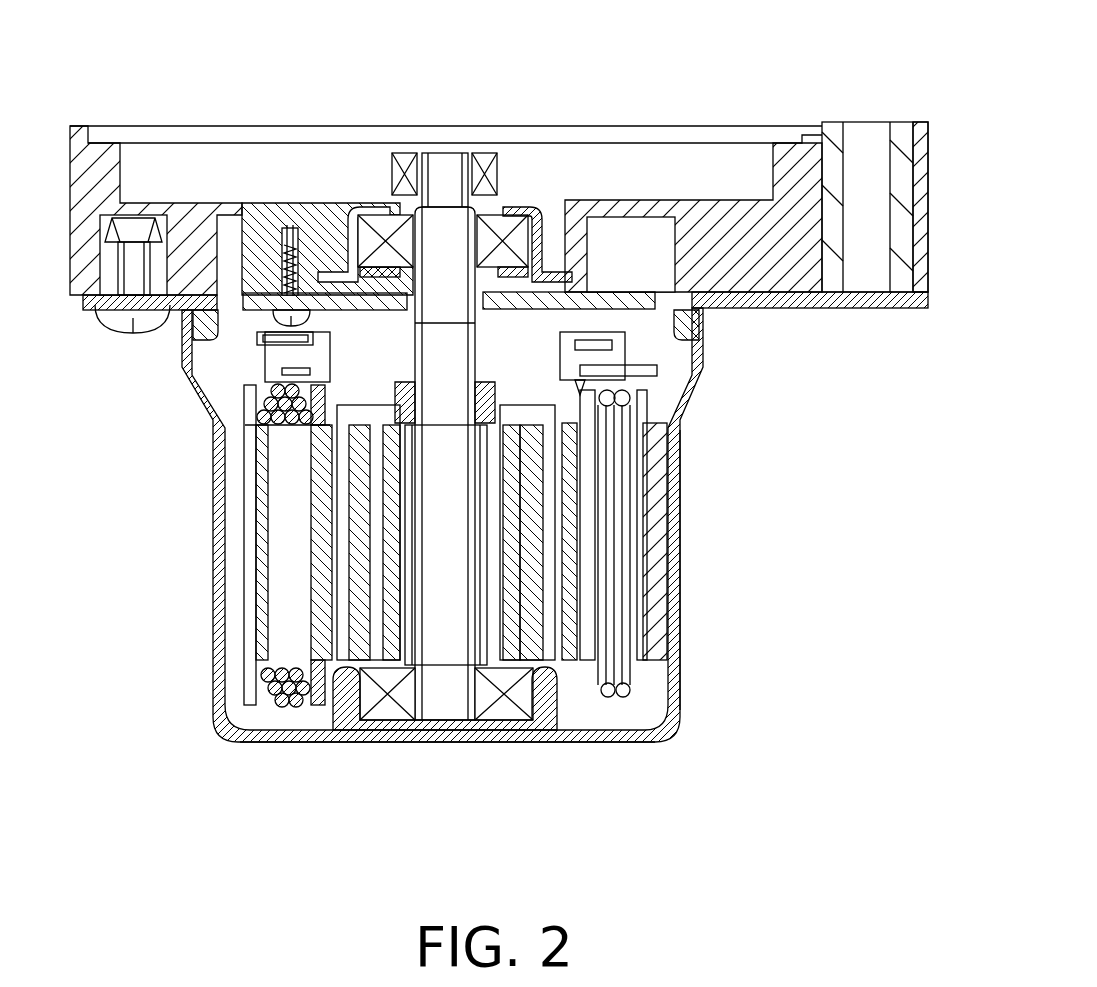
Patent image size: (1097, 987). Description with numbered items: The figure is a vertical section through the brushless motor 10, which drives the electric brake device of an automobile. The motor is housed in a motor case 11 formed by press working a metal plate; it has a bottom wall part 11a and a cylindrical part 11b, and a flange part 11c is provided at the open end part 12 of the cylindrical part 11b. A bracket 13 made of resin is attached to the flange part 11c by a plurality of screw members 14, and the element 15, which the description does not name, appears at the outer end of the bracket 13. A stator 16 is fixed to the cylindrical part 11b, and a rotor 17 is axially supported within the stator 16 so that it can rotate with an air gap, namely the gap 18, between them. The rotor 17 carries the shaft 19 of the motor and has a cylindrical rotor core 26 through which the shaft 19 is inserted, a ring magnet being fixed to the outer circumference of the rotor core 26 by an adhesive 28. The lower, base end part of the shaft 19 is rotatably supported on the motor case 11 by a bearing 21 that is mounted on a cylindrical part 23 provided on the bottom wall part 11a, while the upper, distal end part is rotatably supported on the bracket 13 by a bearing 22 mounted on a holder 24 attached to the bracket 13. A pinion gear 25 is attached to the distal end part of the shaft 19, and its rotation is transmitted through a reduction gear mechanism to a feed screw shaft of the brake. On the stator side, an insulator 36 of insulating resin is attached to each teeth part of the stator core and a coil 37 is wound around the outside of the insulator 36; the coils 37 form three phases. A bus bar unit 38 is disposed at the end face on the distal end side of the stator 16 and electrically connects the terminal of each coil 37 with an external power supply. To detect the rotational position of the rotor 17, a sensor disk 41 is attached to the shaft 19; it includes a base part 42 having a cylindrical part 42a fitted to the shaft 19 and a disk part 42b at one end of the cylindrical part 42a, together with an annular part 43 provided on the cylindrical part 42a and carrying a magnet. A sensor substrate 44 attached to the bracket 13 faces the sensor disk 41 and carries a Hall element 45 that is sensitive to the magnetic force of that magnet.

The brushless motor 10 is at (736, 100).
The motor case 11 is at (680, 692).
The bottom wall part 11a is at (603, 745).
The cylindrical part 11b is at (683, 505).
The flange part 11c is at (835, 308).
The open end part 12 is at (262, 356).
The bracket 13 is at (188, 204).
The screw member 14 is at (104, 322).
The cylindrical portion 15 is at (905, 132).
The stator 16 is at (655, 545).
The rotor 17 is at (550, 470).
The gap 18 is at (262, 545).
The shaft 19 is at (438, 727).
The bearing 21 is at (380, 724).
The bearing 22 is at (343, 262).
The cylindrical part 23 is at (545, 732).
The holder 24 is at (535, 206).
The pinion gear 25 is at (488, 150).
The rotor core 26 is at (322, 610).
The adhesive 28 is at (336, 490).
The insulator 36 is at (250, 440).
The coil 37 is at (280, 706).
The bus bar unit 38 is at (192, 383).
The sensor disk 41 is at (399, 320).
The base part 42 is at (691, 383).
The cylindrical part 42a is at (600, 376).
The disk part 42b is at (565, 356).
The annular part 43 is at (532, 312).
The sensor substrate 44 is at (613, 290).
The Hall element 45 is at (316, 222).